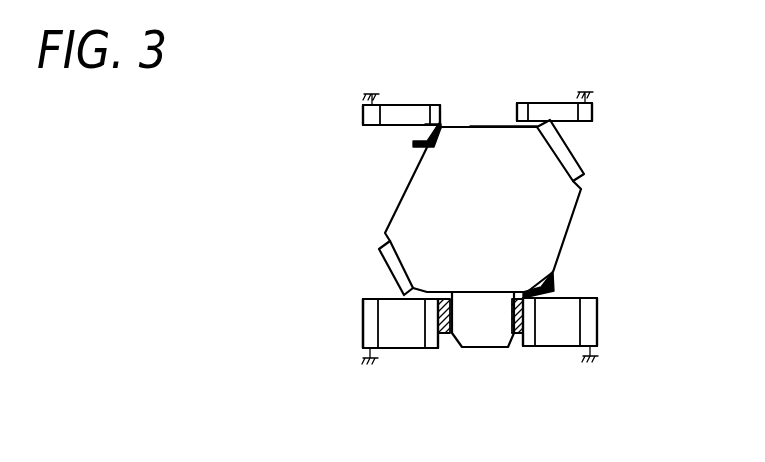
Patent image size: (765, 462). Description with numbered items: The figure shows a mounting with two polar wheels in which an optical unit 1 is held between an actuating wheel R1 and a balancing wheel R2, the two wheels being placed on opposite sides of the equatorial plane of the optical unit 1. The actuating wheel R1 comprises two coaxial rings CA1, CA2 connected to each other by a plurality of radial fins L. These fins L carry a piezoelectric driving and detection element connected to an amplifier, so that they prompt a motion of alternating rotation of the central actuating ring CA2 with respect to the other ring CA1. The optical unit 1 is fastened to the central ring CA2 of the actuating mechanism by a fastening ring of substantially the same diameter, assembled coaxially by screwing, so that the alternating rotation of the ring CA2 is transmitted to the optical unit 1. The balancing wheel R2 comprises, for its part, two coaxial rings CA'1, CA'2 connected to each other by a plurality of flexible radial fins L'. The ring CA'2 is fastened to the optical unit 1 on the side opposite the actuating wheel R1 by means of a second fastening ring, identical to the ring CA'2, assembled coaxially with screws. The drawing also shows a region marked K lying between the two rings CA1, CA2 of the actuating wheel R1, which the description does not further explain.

The optical unit 1 is at (562, 218).
The actuating wheel R1 is at (331, 335).
The balancing wheel R2 is at (337, 115).
The radial fins L is at (480, 359).
The flexible radial fins L' is at (401, 79).
The outer ring CA1 is at (363, 303).
The actuating ring CA2 is at (438, 343).
The ring of balancing wheel CA'1 is at (373, 163).
The ring of balancing wheel CA'2 is at (531, 73).
The chamber K is at (496, 331).